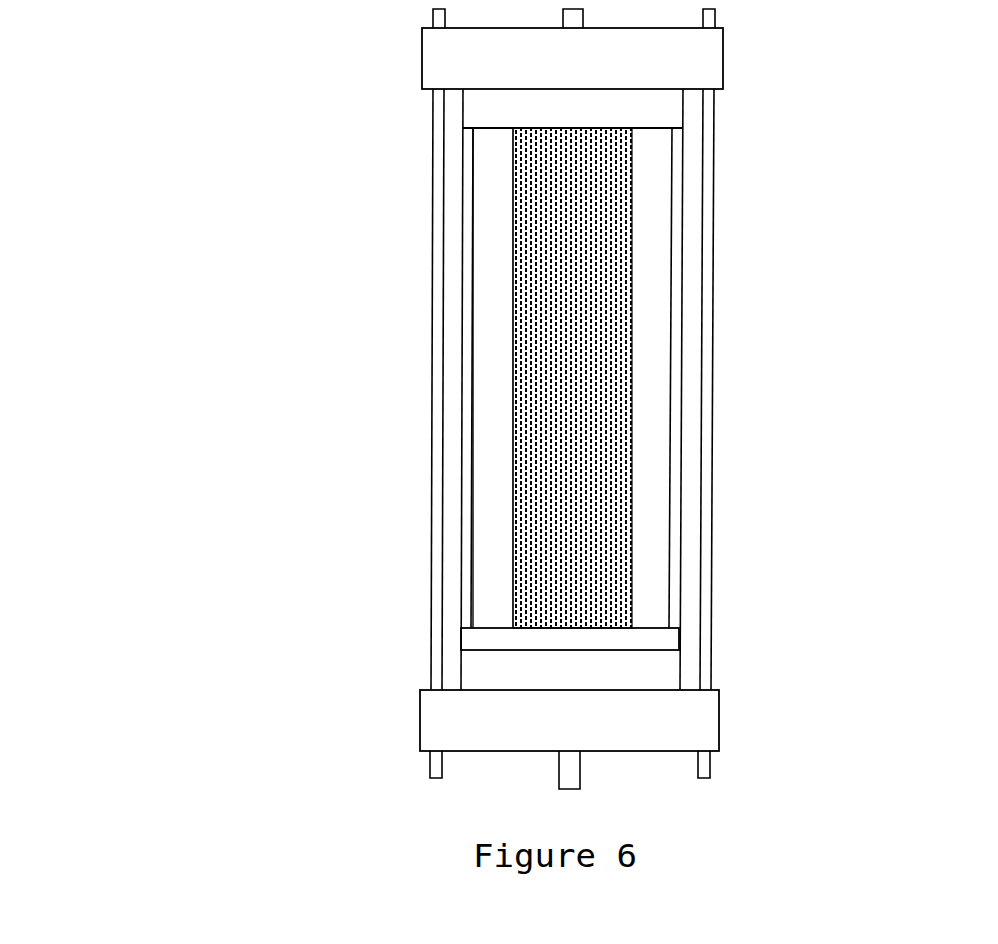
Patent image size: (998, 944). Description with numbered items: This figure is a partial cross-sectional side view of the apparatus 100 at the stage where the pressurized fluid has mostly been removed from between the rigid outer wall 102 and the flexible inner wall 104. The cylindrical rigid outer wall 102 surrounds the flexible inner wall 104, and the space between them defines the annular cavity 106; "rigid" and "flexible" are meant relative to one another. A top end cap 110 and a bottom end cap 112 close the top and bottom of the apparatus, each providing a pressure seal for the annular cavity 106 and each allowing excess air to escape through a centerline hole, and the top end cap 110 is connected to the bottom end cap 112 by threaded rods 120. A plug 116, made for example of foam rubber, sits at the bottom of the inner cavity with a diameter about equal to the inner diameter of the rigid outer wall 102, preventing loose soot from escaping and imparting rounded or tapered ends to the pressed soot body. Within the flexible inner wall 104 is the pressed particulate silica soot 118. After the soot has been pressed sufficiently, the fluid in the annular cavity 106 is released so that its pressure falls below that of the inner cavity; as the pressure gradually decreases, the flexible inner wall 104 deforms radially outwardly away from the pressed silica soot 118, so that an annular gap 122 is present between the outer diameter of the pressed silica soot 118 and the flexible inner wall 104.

The apparatus 100 is at (366, 144).
The rigid outer wall 102 is at (683, 210).
The flexible inner wall 104 is at (472, 298).
The annular cavity 106 is at (675, 371).
The top end cap 110 is at (692, 61).
The bottom end cap 112 is at (698, 720).
The plug 116 is at (670, 640).
The particulate silica soot 118 is at (582, 439).
The threaded rods 120 is at (703, 460).
The annular gap 122 is at (490, 388).